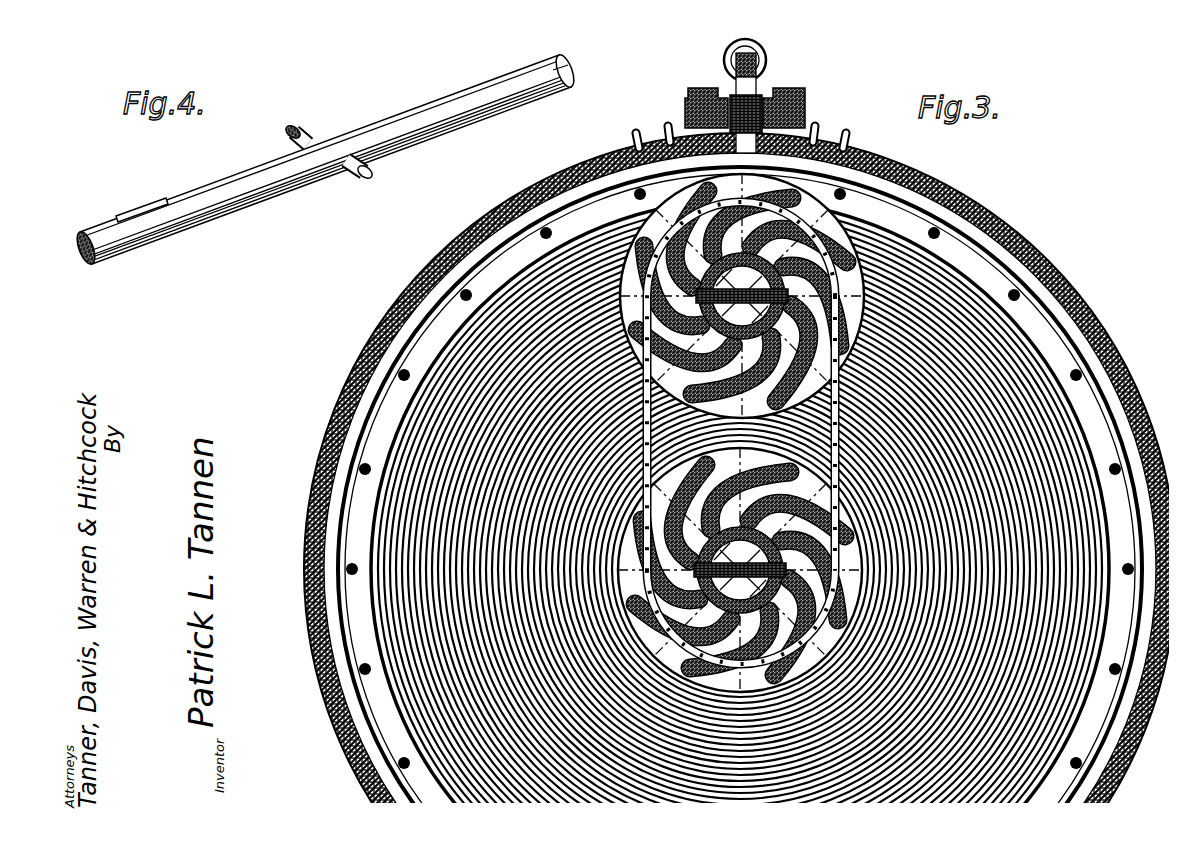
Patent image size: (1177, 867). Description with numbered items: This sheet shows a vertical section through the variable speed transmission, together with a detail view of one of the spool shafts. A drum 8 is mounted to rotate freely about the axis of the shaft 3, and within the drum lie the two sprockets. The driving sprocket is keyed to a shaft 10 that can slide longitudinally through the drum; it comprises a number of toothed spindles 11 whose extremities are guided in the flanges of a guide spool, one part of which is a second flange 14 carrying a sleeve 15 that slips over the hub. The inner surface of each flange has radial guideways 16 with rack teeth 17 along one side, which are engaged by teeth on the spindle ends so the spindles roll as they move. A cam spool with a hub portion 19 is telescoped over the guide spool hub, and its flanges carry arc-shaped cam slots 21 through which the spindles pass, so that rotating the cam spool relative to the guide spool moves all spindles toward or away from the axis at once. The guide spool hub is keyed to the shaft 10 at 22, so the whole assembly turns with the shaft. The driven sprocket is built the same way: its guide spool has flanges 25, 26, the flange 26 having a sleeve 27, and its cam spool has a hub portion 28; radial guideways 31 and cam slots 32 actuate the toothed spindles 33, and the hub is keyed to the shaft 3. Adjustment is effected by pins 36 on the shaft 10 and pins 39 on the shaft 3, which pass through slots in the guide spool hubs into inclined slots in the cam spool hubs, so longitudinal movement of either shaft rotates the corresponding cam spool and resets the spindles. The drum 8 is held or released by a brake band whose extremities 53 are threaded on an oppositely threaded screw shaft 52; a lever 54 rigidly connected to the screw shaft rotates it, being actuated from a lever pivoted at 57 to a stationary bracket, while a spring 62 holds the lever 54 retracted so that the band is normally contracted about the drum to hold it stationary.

In FIG. 3, the shaft 3 is at (726, 600).
In FIG. 3, the drum 8 is at (382, 573).
In FIG. 4, the shaft 10 is at (345, 134).
In FIG. 3, the toothed spindles 11 is at (740, 206).
In FIG. 3, the second flange 14 is at (834, 326).
In FIG. 3, the sleeve 15 is at (799, 287).
In FIG. 3, the radial slots or guideways 16 is at (672, 286).
In FIG. 3, the rack teeth 17 is at (734, 239).
In FIG. 3, the hub portion 19 is at (741, 365).
In FIG. 3, the arc-shaped cam slots 21 is at (794, 354).
In FIG. 4, the key 22 is at (134, 209).
In FIG. 3, the flange 25 is at (832, 452).
In FIG. 3, the flange 26 is at (784, 639).
In FIG. 3, the sleeve 27 is at (726, 570).
In FIG. 3, the hub portion 28 is at (797, 511).
In FIG. 3, the radial guideways 31 is at (715, 597).
In FIG. 3, the cam slots 32 is at (682, 624).
In FIG. 3, the toothed spindles 33 is at (731, 503).
In FIG. 3, the pins 36 is at (685, 352).
In FIG. 4, the pins 36 is at (358, 172).
In FIG. 3, the pins 39 is at (809, 572).
In FIG. 3, the screw shaft 52 is at (797, 100).
In FIG. 3, the extremities of the brake band 53 is at (690, 86).
In FIG. 3, the lever 54 is at (748, 72).
In FIG. 3, the pivot 57 is at (870, 166).
In FIG. 3, the spring 62 is at (720, 48).